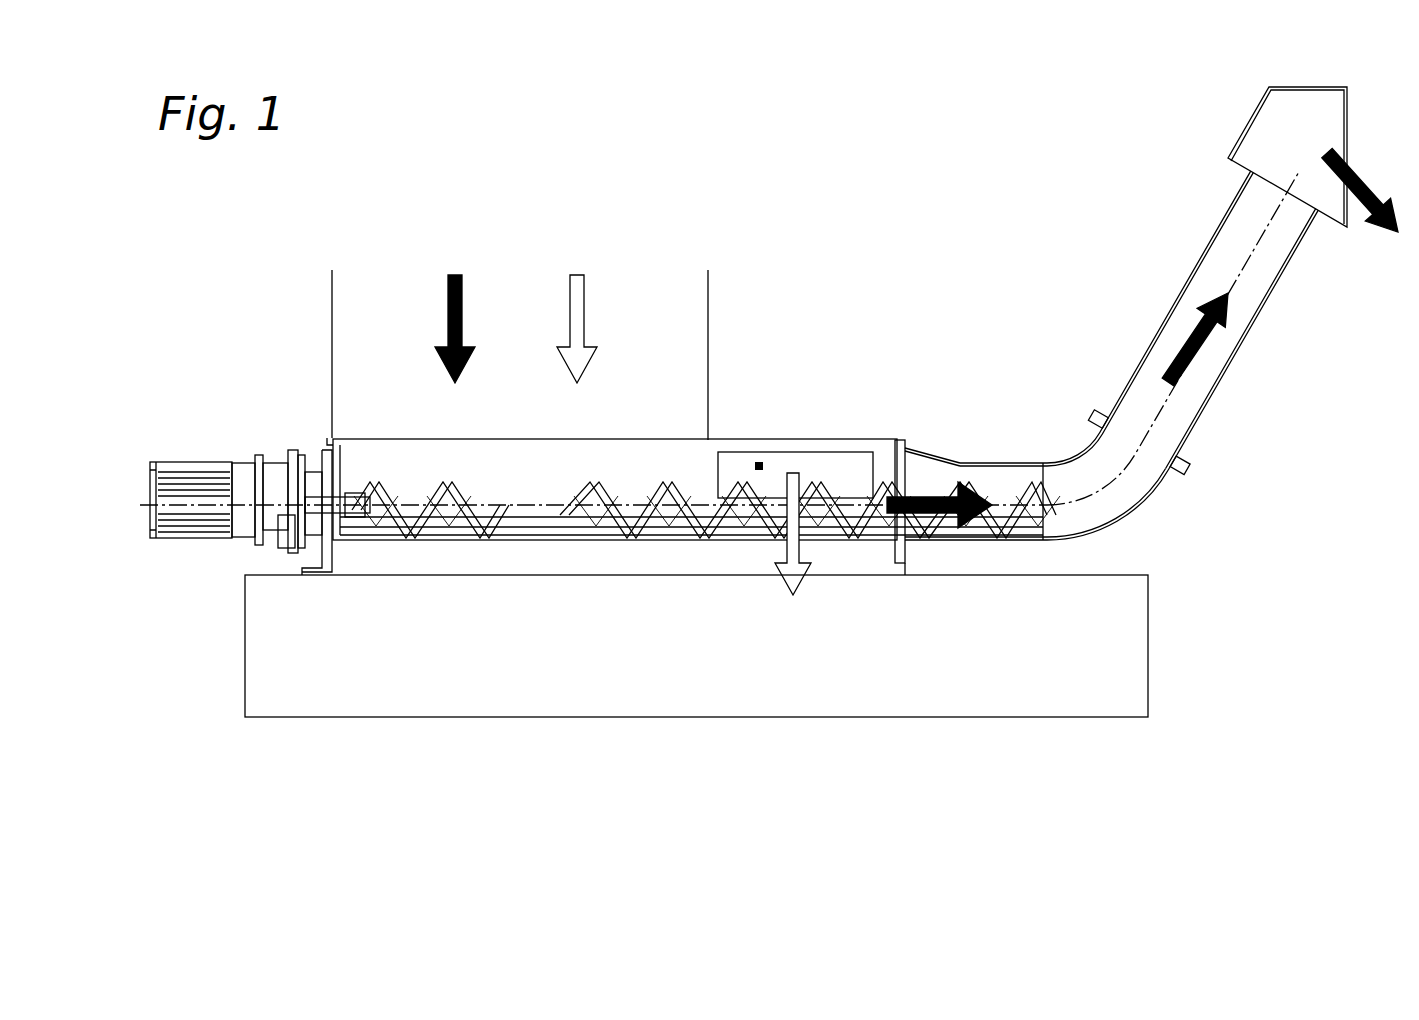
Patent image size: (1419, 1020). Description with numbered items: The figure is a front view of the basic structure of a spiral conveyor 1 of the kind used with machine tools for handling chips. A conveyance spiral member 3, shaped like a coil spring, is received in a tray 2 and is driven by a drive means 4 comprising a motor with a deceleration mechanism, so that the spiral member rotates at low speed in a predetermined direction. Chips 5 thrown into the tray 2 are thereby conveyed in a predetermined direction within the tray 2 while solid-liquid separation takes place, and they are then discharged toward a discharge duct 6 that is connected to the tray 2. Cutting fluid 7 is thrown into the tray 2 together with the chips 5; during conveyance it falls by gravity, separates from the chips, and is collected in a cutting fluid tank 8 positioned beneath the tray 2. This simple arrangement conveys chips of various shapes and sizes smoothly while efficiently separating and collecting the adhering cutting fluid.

The spiral conveyor 1 is at (286, 316).
The tray 2 is at (512, 552).
The conveyance spiral member 3 is at (456, 516).
The drive means 4 is at (204, 455).
The chips 5 is at (455, 273).
The discharge duct 6 is at (1214, 226).
The cutting fluid 7 is at (577, 273).
The cutting fluid tank 8 is at (910, 722).